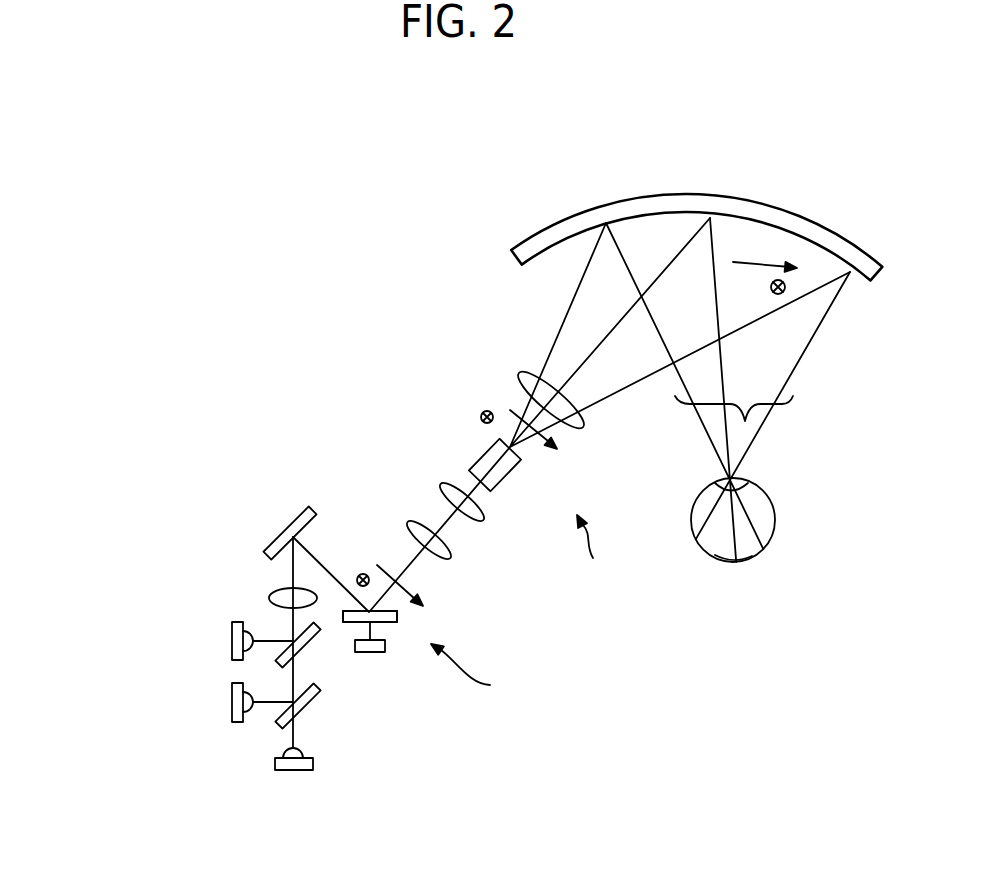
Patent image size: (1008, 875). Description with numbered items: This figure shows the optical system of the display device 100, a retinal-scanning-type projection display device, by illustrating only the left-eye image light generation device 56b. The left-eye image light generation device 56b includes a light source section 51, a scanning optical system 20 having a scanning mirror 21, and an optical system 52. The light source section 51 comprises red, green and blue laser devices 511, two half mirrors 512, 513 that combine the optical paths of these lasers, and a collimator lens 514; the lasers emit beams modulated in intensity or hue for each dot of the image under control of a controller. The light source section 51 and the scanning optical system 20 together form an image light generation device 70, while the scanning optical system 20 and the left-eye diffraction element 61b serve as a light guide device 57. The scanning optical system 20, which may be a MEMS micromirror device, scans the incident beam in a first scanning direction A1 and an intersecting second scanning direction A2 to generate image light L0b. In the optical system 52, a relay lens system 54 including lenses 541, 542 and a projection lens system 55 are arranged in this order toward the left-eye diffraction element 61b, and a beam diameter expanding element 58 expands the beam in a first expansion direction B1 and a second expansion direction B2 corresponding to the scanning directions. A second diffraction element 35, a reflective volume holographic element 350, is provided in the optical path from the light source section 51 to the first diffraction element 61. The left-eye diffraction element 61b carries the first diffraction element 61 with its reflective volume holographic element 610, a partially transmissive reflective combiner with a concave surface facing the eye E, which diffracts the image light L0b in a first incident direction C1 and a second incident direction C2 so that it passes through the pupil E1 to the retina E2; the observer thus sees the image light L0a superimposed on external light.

The display device 100 is at (113, 287).
The left-eye diffraction element 61b is at (696, 214).
The first diffraction element 61 is at (696, 214).
The reflective volume holographic element 610 is at (767, 222).
The image light L0b is at (746, 420).
The eye E is at (776, 516).
The pupil E1 is at (748, 489).
The retina E2 is at (754, 557).
The first incident direction C1 is at (771, 288).
The second incident direction C2 is at (772, 264).
The projection lens system 55 is at (530, 372).
The beam diameter expanding element 58 is at (476, 432).
The first expansion direction B1 is at (487, 410).
The second expansion direction B2 is at (535, 440).
The left-eye image light generation device 56b is at (607, 549).
The image light L0a is at (412, 562).
The relay lens system 54 is at (413, 455).
The lens 541 is at (413, 524).
The lens 542 is at (444, 484).
The optical system 52 is at (445, 257).
The light guide device 57 is at (386, 254).
The light source section 51 is at (40, 727).
The second diffraction element 35 is at (268, 507).
The reflective volume holographic element 350 is at (298, 521).
The first scanning direction A1 is at (363, 572).
The second scanning direction A2 is at (417, 602).
The scanning optical system 20 is at (398, 622).
The scanning mirror 21 is at (349, 624).
The image light generation device 70 is at (479, 673).
The collimator lens 514 is at (272, 594).
The half mirror 513 is at (275, 658).
The half mirror 512 is at (275, 724).
The laser device 511 is at (232, 700).